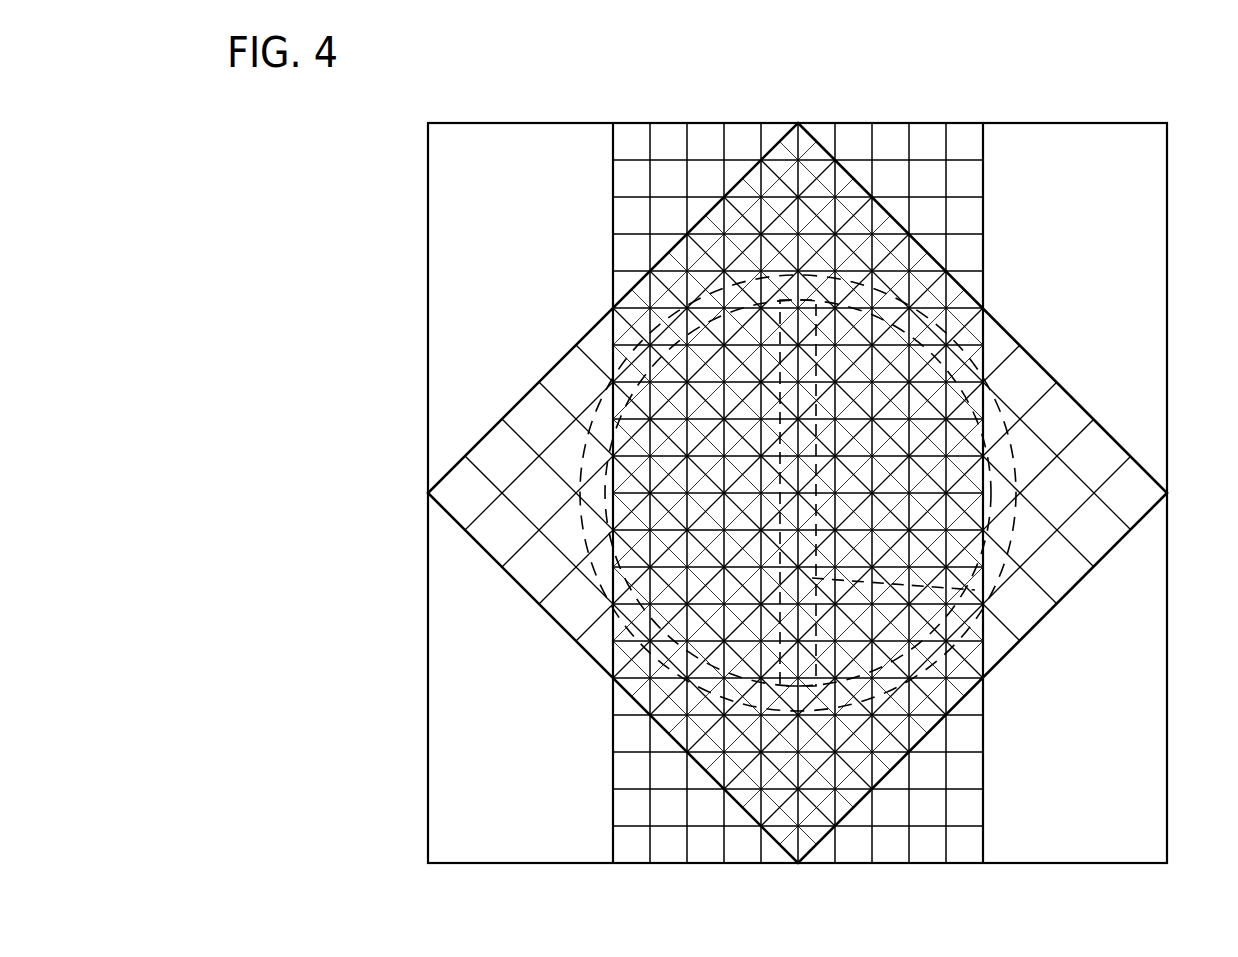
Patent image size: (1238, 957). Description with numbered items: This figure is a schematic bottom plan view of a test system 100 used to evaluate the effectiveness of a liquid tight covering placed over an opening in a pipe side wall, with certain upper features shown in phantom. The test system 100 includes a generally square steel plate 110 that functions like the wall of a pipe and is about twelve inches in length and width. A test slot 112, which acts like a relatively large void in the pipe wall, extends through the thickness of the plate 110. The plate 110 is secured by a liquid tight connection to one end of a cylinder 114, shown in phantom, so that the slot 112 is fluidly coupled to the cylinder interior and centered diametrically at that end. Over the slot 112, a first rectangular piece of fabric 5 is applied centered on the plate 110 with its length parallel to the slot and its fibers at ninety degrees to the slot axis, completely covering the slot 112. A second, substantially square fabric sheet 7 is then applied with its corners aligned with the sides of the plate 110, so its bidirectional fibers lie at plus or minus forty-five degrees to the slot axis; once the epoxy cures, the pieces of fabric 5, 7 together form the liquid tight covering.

The first rectangular shaped piece of fabric 5 is at (928, 177).
The second square fabric sheet 7 is at (1093, 530).
The test system 100 is at (314, 383).
The steel plate 110 is at (428, 798).
The test slot 112 is at (985, 605).
The cylinder 114 is at (985, 277).